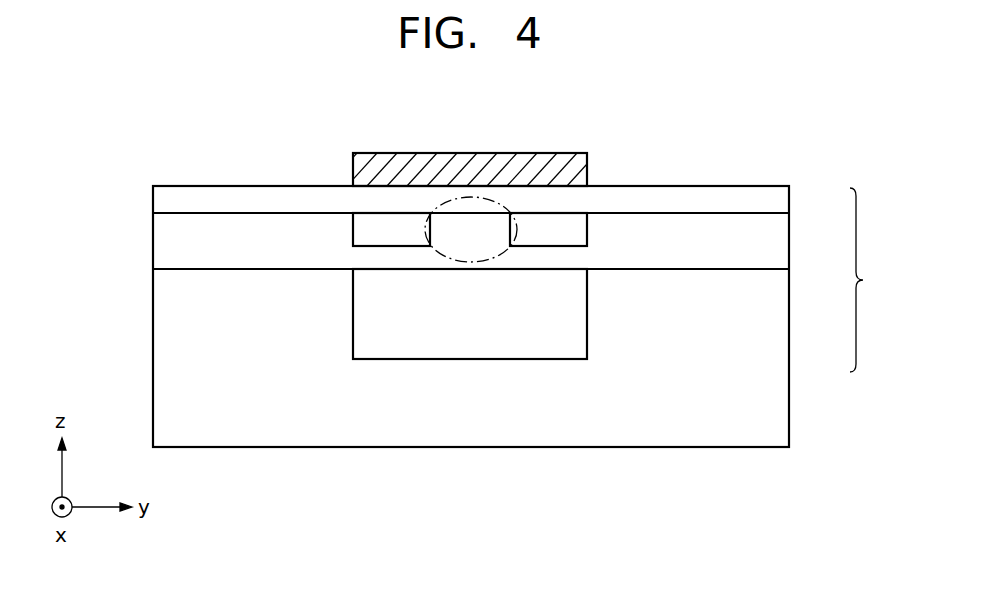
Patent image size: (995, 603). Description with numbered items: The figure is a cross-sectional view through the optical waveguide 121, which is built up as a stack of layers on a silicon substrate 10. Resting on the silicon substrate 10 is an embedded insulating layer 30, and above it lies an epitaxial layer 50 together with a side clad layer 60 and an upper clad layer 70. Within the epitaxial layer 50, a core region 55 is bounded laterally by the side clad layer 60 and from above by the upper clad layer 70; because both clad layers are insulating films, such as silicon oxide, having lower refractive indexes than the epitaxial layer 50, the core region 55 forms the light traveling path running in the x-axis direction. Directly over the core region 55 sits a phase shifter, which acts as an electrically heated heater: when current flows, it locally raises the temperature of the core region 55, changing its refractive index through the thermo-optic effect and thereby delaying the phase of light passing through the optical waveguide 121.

The silicon substrate 10 is at (780, 360).
The embedded insulating layer 30 is at (573, 322).
The epitaxial layer 50 is at (780, 255).
The core region 55 is at (510, 249).
The side clad layer 60 is at (577, 228).
The upper clad layer 70 is at (780, 198).
The optical waveguide 121 is at (880, 280).